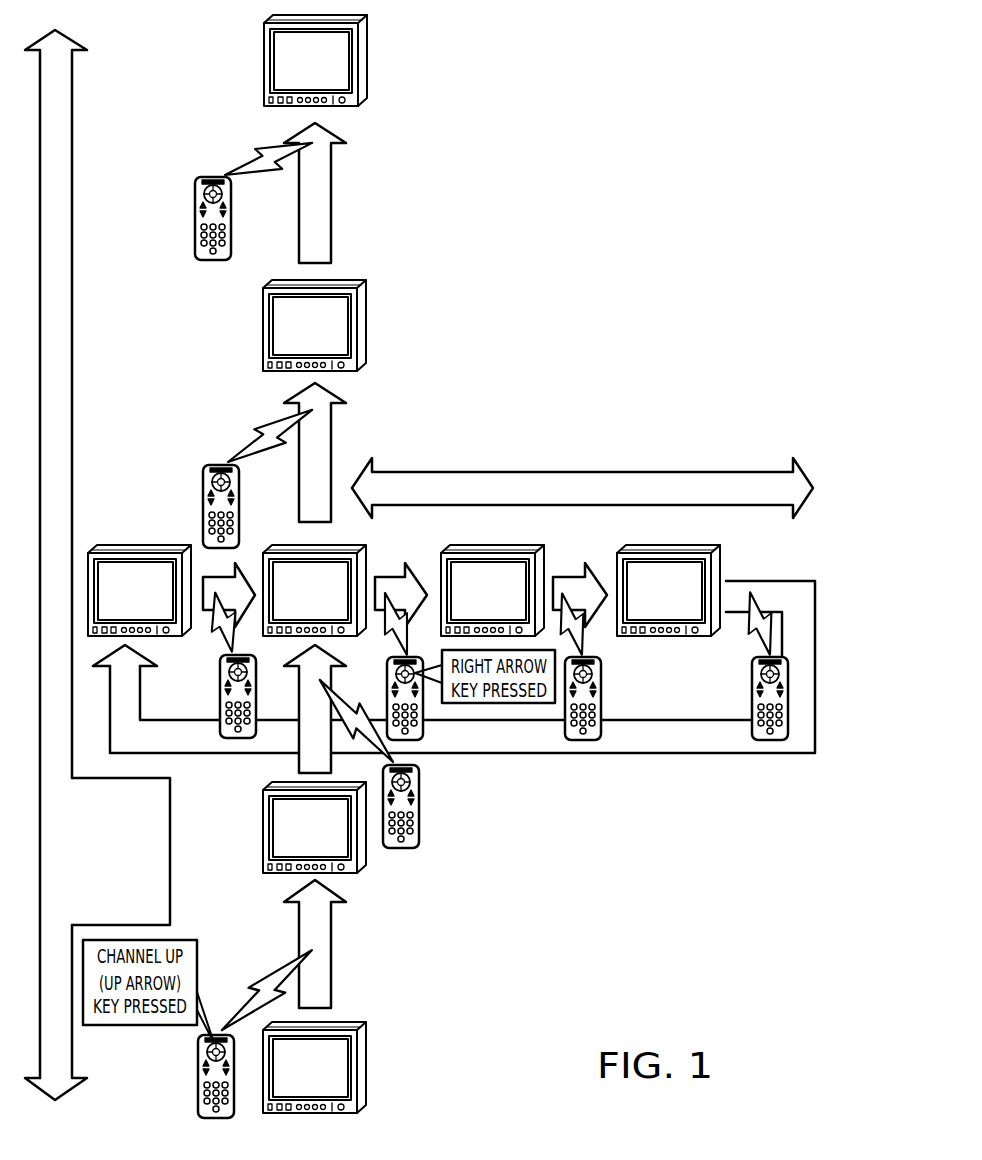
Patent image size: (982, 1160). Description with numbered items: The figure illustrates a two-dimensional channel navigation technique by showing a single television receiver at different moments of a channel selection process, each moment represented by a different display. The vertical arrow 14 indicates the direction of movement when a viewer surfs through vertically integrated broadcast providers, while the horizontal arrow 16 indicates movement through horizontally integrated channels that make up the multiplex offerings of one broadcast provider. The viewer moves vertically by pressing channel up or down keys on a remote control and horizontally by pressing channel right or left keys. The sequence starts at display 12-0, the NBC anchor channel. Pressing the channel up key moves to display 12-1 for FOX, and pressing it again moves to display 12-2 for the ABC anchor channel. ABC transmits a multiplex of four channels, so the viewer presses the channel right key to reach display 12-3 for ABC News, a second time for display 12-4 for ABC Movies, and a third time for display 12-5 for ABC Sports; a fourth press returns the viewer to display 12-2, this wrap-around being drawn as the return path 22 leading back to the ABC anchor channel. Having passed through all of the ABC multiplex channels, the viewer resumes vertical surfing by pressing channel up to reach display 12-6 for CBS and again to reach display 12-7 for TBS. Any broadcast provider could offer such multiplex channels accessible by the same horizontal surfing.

The display 12-0 is at (340, 1053).
The display 12-1 is at (283, 815).
The display 12-2 is at (340, 580).
The display 12-3 is at (515, 578).
The display 12-4 is at (690, 578).
The display 12-5 is at (160, 575).
The display 12-6 is at (340, 318).
The display 12-7 is at (340, 51).
The arrow 14 is at (72, 290).
The arrow 16 is at (525, 471).
The wrap-around path returning to first horizontally integrated channel 22 is at (597, 762).